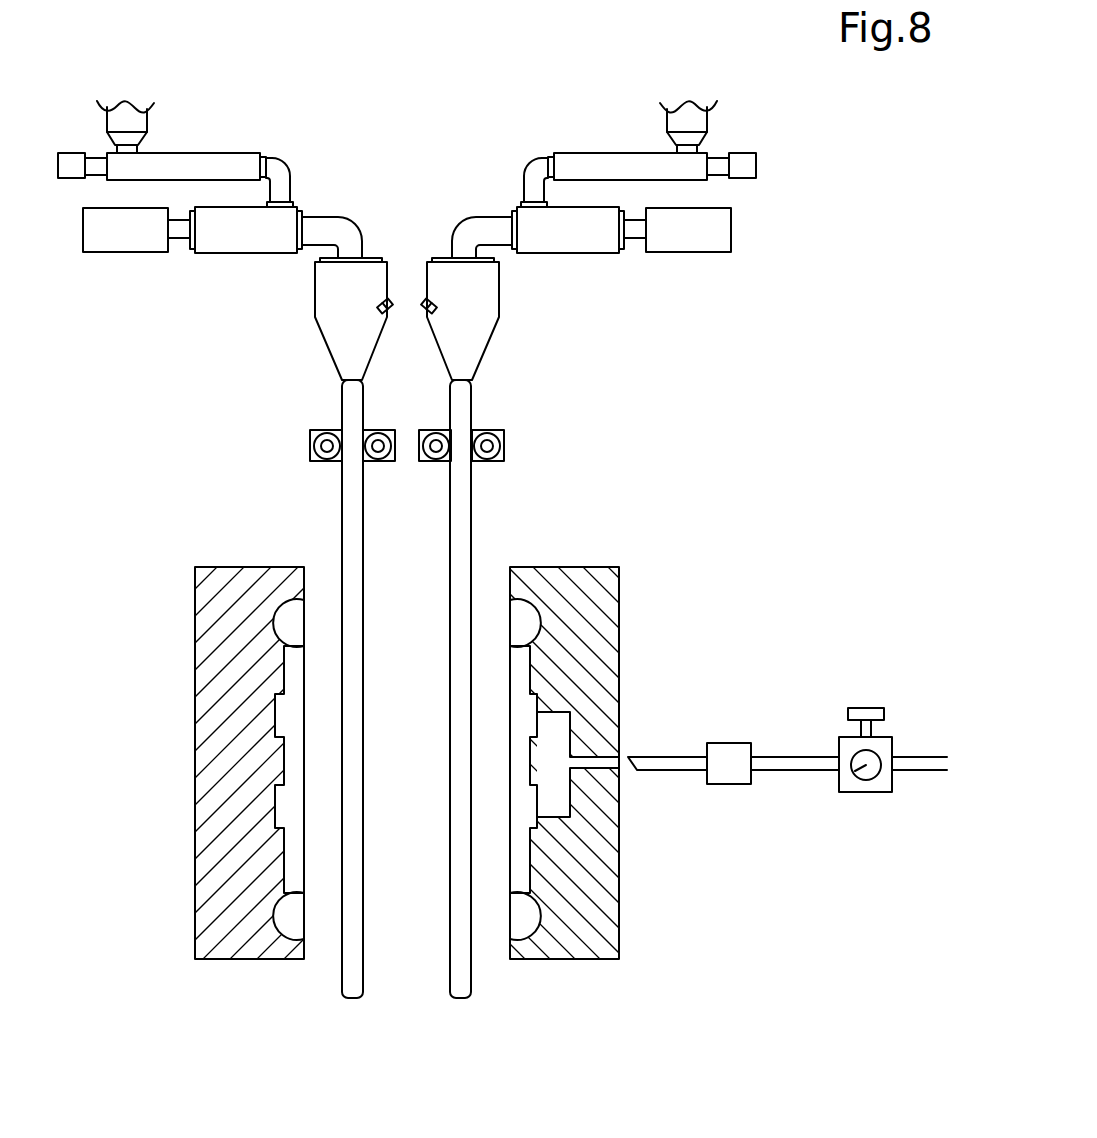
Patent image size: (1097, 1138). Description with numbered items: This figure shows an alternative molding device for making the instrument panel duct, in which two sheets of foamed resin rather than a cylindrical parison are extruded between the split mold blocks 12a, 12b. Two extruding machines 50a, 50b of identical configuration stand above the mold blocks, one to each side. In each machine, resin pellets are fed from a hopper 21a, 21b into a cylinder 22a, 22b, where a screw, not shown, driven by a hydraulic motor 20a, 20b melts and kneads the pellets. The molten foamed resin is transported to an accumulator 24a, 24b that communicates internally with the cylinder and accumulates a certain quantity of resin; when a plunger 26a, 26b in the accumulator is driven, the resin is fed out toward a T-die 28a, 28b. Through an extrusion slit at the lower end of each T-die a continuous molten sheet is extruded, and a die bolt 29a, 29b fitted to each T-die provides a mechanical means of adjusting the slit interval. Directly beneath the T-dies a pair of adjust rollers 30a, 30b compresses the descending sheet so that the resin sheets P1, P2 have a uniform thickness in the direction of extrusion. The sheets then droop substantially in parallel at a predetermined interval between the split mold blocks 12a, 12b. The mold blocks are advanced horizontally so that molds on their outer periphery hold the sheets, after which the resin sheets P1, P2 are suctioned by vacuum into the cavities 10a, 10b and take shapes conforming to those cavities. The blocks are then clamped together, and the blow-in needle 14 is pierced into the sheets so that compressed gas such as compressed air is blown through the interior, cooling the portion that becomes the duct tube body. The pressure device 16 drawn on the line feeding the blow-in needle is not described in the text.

The cavity 10a is at (291, 622).
The cavity 10b is at (535, 622).
The split mold block 12a is at (371, 750).
The split mold block 12b is at (553, 750).
The blow-in needle 14 is at (672, 771).
The pressure gauge / regulator 16 is at (864, 793).
The hydraulic motor 20a is at (75, 153).
The hydraulic motor 20b is at (744, 153).
The hopper 21a is at (130, 115).
The hopper 21b is at (688, 118).
The cylinder 22a is at (212, 162).
The cylinder 22b is at (598, 162).
The accumulator 24a is at (250, 253).
The accumulator 24b is at (562, 253).
The plunger 26a is at (183, 238).
The plunger 26b is at (633, 238).
The T-die 28a is at (317, 318).
The T-die 28b is at (478, 350).
The die bolt 29a is at (386, 300).
The die bolt 29b is at (420, 300).
The adjust rollers 30a is at (375, 430).
The adjust rollers 30b is at (437, 430).
The extruding machine 50a is at (307, 108).
The extruding machine 50b is at (500, 106).
The resin sheet P1 is at (350, 1000).
The resin sheet P2 is at (458, 1000).